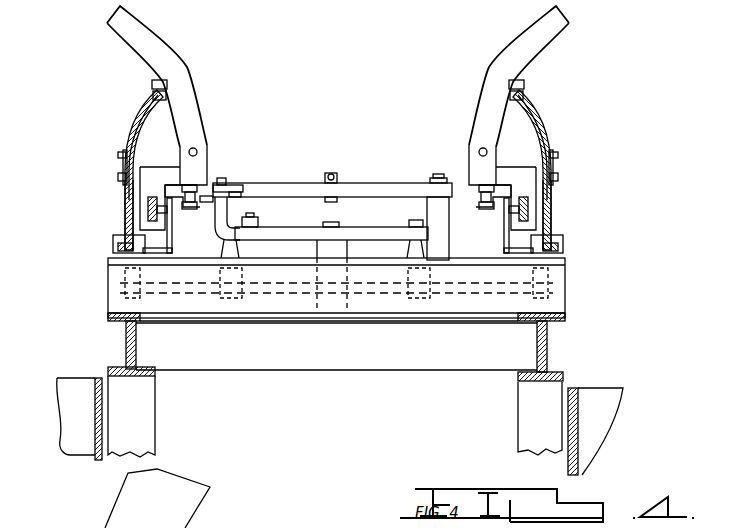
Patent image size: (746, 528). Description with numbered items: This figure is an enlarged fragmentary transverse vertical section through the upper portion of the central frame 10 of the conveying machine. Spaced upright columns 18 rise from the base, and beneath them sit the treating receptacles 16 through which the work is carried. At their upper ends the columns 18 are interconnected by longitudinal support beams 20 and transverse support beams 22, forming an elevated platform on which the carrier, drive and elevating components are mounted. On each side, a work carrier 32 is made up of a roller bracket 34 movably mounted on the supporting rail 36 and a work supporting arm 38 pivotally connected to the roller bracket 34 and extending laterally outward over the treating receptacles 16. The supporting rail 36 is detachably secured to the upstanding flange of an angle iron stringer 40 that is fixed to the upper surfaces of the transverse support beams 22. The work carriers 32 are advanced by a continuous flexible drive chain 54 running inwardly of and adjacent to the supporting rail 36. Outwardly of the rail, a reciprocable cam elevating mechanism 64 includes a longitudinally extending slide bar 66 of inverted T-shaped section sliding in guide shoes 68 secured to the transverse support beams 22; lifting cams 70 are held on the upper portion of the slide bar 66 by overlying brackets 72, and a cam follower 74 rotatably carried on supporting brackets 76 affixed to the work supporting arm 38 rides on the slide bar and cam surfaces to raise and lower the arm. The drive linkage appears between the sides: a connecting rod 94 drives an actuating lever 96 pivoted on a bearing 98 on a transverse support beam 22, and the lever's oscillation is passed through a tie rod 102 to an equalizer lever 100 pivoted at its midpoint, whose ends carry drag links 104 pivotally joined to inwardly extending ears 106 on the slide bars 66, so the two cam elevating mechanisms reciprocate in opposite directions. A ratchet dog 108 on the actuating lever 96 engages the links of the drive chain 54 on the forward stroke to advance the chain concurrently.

The central frame 10 is at (170, 435).
The treating receptacles 16 is at (70, 386).
The upright columns 18 is at (143, 400).
The longitudinal support beams 20 is at (127, 337).
The transverse support beams 22 is at (127, 297).
The work carriers 32 is at (478, 93).
The roller bracket 34 is at (203, 168).
The supporting rail 36 is at (148, 210).
The work supporting arm 38 is at (147, 38).
The angle iron stringer 40 is at (167, 237).
The drive chain 54 is at (196, 207).
The reciprocable cam elevating mechanism 64 is at (122, 130).
The slide bar 66 is at (128, 192).
The guide shoes 68 is at (125, 240).
The lifting cams 70 is at (143, 108).
The overlying brackets 72 is at (122, 165).
The cam follower 74 is at (152, 88).
The supporting brackets 76 is at (178, 498).
The connecting rod 94 is at (330, 173).
The actuating lever 96 is at (355, 182).
The bearing 98 is at (437, 208).
The equalizer lever 100 is at (371, 233).
The tie rod 102 is at (227, 210).
The drag link 104 is at (237, 250).
The inwardly extending ears 106 is at (183, 322).
The ratchet dog 108 is at (207, 190).